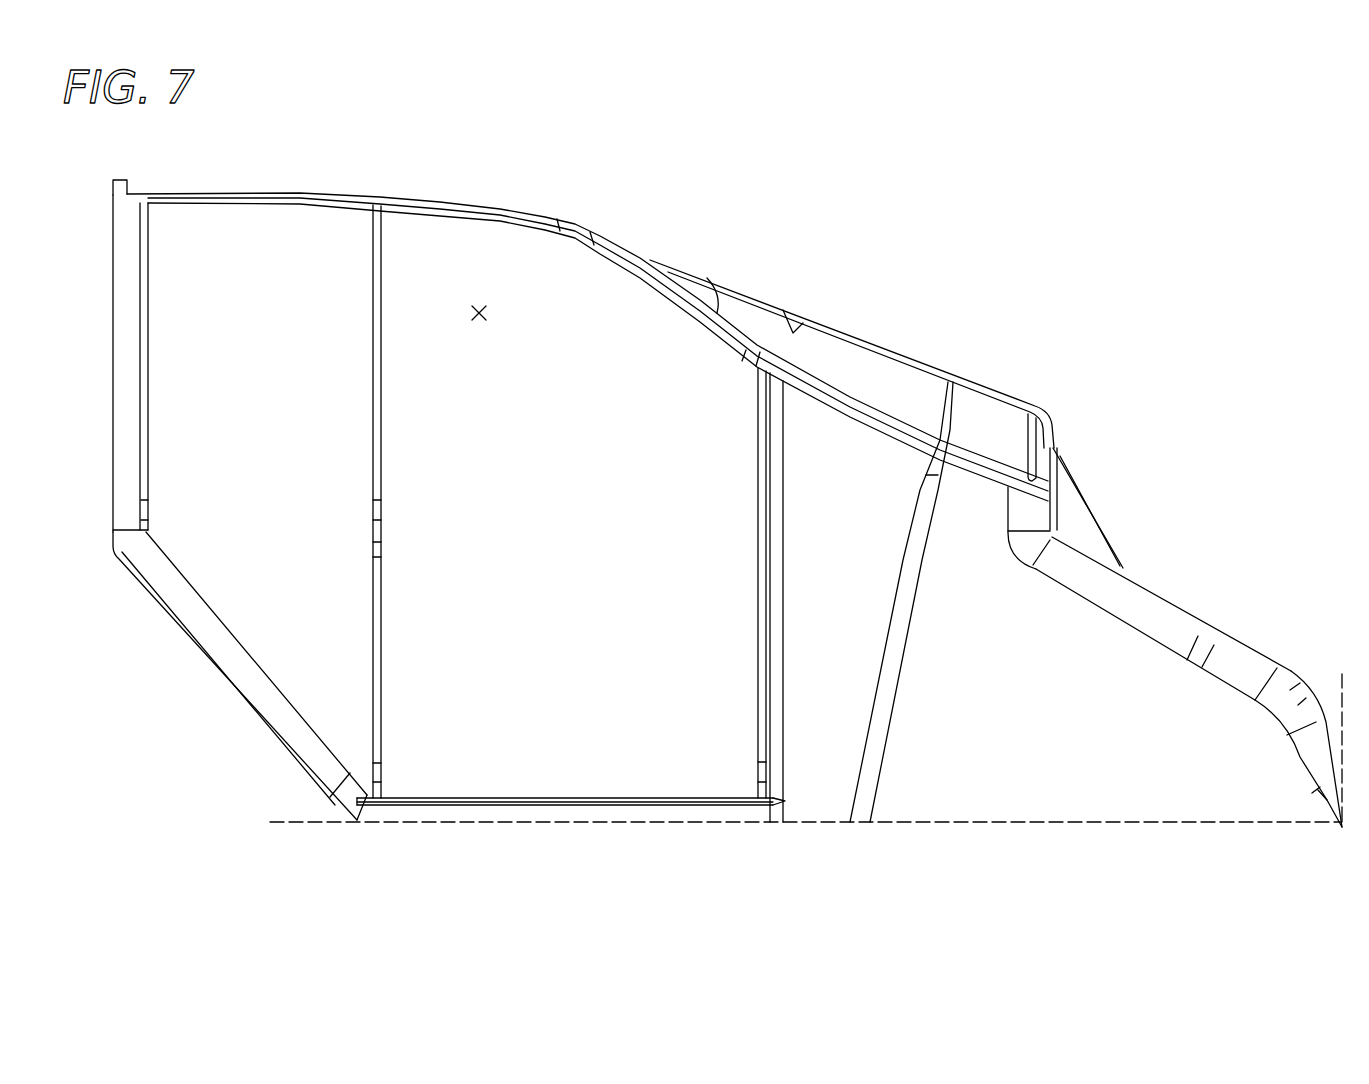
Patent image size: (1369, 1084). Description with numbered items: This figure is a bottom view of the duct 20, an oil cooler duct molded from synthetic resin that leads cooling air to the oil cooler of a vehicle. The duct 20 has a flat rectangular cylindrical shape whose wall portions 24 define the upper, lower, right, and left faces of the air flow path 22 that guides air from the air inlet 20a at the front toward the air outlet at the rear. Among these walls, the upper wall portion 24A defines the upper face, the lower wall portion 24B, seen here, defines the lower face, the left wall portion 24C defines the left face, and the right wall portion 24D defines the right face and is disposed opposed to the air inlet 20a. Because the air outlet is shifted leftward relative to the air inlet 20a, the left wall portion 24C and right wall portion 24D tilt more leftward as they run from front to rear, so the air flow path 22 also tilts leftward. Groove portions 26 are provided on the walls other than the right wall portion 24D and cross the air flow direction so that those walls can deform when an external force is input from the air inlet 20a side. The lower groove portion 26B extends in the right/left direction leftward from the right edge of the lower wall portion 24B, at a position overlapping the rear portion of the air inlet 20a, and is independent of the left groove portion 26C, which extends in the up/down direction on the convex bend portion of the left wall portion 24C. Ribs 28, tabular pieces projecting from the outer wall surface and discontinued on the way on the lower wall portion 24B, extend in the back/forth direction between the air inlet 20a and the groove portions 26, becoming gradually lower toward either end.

The duct 20 is at (1004, 268).
The air inlet 20a is at (797, 332).
The air flow path 22 is at (479, 305).
The wall portions 24 is at (696, 510).
The upper wall portion 24A is at (862, 372).
The lower wall portion 24B is at (277, 643).
The left wall portion 24C is at (1178, 613).
The right wall portion 24D is at (178, 627).
The groove portions 26 is at (849, 745).
The lower groove portion 26B is at (592, 802).
The left groove portion 26C is at (1295, 693).
The ribs 28 is at (372, 667).